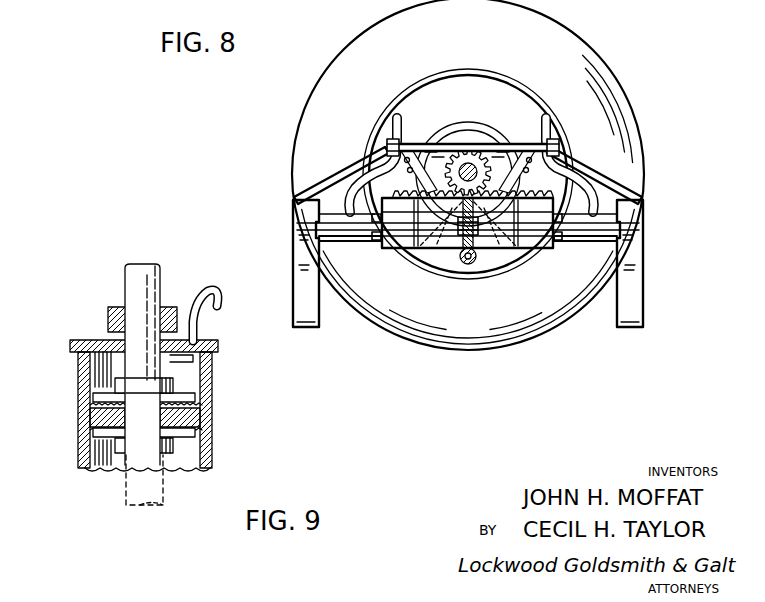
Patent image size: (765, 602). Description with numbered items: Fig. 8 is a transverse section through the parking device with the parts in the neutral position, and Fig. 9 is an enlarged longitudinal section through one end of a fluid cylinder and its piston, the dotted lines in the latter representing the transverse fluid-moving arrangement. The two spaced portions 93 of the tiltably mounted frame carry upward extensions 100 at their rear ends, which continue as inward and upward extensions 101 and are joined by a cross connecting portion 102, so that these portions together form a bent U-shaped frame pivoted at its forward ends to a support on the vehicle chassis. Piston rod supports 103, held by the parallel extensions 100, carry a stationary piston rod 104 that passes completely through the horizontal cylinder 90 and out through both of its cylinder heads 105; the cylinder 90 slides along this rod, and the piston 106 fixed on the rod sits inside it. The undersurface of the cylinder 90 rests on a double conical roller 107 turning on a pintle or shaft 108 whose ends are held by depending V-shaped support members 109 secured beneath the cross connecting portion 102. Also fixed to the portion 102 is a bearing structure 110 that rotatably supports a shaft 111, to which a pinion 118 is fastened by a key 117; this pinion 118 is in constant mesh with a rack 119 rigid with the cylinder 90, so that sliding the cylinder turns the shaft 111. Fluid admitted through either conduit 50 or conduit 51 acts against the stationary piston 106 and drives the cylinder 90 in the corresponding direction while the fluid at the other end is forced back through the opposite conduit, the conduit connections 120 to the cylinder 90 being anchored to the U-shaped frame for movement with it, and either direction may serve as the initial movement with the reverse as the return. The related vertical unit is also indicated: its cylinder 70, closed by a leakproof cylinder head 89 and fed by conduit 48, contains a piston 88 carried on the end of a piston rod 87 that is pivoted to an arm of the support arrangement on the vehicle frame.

In FIG. 8, the pinion 118 is at (453, 147).
In FIG. 8, the V-shaped support members 109 is at (420, 173).
In FIG. 8, the cross connecting portion 102 is at (482, 190).
In FIG. 8, the key 117 is at (467, 150).
In FIG. 8, the bearing structure 110 is at (487, 157).
In FIG. 8, the shaft 111 is at (506, 158).
In FIG. 8, the conduit 50 is at (552, 140).
In FIG. 8, the conduit connections 120 is at (562, 140).
In FIG. 8, the conduit 51 is at (392, 132).
In FIG. 8, the inward and upward extensions 101 is at (347, 167).
In FIG. 8, the piston rod supports 103 is at (294, 240).
In FIG. 8, the upward extensions 100 is at (296, 282).
In FIG. 8, the spaced portions 93 is at (305, 322).
In FIG. 8, the cylinder heads 105 is at (384, 250).
In FIG. 8, the stationary piston rod 104 is at (340, 232).
In FIG. 9, the stationary piston rod 104 is at (127, 506).
In FIG. 8, the horizontal cylinder 90 is at (403, 250).
In FIG. 8, the rack 119 is at (417, 200).
In FIG. 8, the pintle or shaft 108 is at (467, 262).
In FIG. 8, the piston 106 is at (480, 252).
In FIG. 8, the double conical roller 107 is at (470, 264).
In FIG. 9, the piston rod 87 is at (132, 284).
In FIG. 9, the cylinder head 89 is at (110, 318).
In FIG. 9, the conduit 48 is at (199, 295).
In FIG. 9, the cylinder 70 is at (213, 400).
In FIG. 9, the piston 88 is at (88, 416).